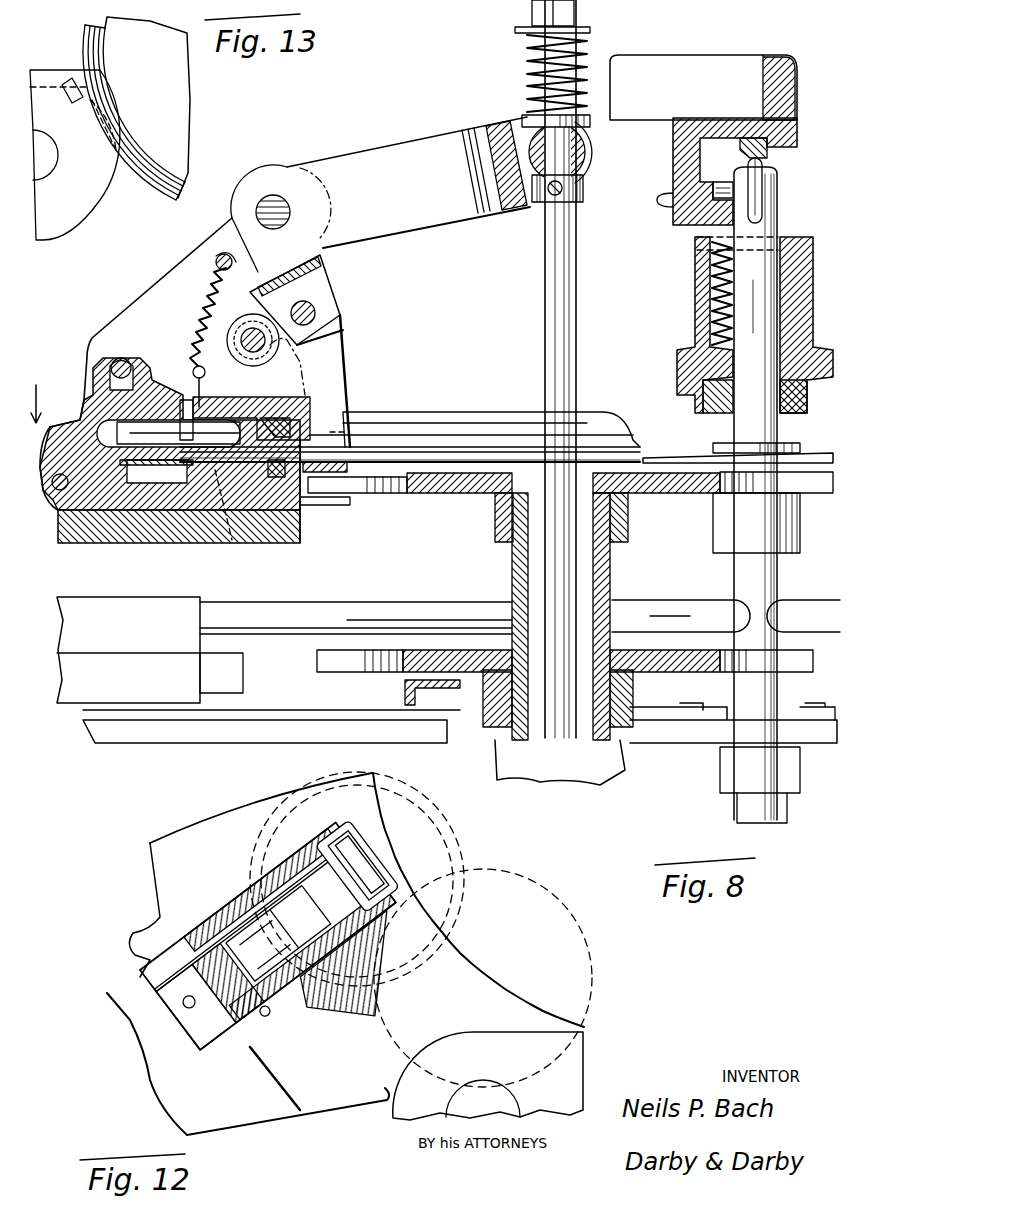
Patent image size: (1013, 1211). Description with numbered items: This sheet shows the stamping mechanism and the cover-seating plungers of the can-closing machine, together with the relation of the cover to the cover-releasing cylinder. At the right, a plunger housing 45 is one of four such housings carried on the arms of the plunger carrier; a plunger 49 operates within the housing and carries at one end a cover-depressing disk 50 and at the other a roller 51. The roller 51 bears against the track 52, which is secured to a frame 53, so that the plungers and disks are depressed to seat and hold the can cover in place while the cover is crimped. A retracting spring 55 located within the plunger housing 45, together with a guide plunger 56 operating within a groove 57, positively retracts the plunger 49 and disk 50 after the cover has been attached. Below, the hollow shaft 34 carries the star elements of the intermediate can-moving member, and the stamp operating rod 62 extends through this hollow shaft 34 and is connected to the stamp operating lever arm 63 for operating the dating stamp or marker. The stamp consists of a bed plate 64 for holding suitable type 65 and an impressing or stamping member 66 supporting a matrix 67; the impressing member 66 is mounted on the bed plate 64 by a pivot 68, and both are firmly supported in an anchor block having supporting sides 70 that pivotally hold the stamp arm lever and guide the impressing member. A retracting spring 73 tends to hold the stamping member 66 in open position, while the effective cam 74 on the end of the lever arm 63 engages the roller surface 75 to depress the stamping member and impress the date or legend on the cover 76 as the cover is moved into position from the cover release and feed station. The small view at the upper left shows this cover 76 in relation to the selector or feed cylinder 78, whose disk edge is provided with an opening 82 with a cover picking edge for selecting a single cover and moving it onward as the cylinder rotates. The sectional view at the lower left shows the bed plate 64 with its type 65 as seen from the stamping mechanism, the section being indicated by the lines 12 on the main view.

In FIG. 8, the carriage 12 is at (378, 426).
In FIG. 8, the hollow shaft 34 is at (610, 588).
In FIG. 8, the plunger housing 45 is at (815, 320).
In FIG. 8, the plunger 49 is at (778, 230).
In FIG. 8, the cover-depressing disk 50 is at (688, 455).
In FIG. 8, the roller 51 is at (765, 168).
In FIG. 8, the track 52 is at (770, 160).
In FIG. 8, the frame 53 is at (772, 94).
In FIG. 8, the retracting spring 55 is at (703, 292).
In FIG. 8, the guide plunger 56 is at (700, 186).
In FIG. 8, the groove 57 is at (690, 168).
In FIG. 8, the stamp operating rod 62 is at (545, 259).
In FIG. 8, the stamp operating lever arm 63 is at (448, 136).
In FIG. 8, the bed plate 64 is at (300, 543).
In FIG. 12, the bed plate 64 is at (226, 900).
In FIG. 8, the type 65 is at (308, 495).
In FIG. 12, the type 65 is at (392, 868).
In FIG. 8, the impressing or stamping member 66 is at (312, 415).
In FIG. 8, the matrix 67 is at (330, 422).
In FIG. 8, the pivot 68 is at (55, 500).
In FIG. 8, the supporting sides 70 is at (150, 296).
In FIG. 8, the retracting spring 73 is at (206, 320).
In FIG. 8, the effective cam 74 is at (345, 336).
In FIG. 8, the roller surface 75 is at (281, 218).
In FIG. 13, the cover 76 is at (173, 116).
In FIG. 8, the cover 76 is at (232, 540).
In FIG. 13, the selector or feed cylinder 78 is at (80, 215).
In FIG. 13, the opening 82 is at (68, 80).